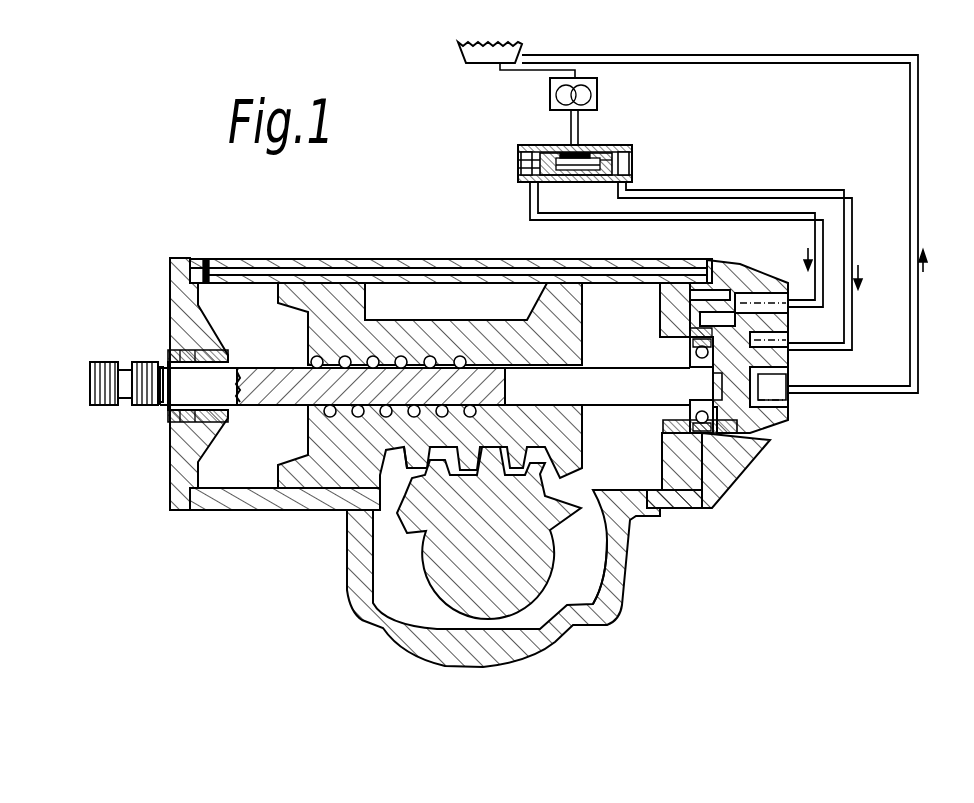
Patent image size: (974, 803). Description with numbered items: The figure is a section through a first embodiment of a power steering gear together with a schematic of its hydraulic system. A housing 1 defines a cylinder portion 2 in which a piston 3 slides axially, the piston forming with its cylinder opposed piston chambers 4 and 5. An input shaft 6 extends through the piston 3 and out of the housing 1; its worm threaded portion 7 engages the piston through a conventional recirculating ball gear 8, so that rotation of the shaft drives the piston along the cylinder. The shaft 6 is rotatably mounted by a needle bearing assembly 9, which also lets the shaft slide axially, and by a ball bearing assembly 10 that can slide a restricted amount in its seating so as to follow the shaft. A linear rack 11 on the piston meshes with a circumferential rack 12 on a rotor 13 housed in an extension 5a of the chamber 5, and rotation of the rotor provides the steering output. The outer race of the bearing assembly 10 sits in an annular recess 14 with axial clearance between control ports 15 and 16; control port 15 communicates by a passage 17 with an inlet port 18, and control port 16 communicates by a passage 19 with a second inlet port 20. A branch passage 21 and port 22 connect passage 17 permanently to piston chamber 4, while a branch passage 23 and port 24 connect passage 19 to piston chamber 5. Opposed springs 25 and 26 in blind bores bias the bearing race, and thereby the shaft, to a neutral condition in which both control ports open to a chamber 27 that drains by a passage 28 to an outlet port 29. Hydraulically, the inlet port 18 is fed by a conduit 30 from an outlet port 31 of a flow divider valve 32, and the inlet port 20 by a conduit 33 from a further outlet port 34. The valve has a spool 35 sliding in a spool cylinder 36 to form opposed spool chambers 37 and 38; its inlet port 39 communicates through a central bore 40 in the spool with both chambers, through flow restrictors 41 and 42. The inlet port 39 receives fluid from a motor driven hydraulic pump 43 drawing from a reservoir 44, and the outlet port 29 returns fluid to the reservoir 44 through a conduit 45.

The housing 1 is at (190, 276).
The cylinder portion 2 is at (212, 284).
The piston 3 is at (420, 322).
The piston chamber 4 is at (246, 468).
The piston chamber 5 is at (626, 456).
The extension of the chamber 5a is at (603, 575).
The input shaft 6 is at (222, 385).
The worm threaded portion 7 is at (262, 372).
The recirculating ball gear 8 is at (316, 356).
The needle bearing assembly 9 is at (200, 420).
The ball bearing assembly 10 is at (712, 440).
The linear rack 11 is at (372, 516).
The circumferential rack 12 is at (395, 530).
The rotor 13 is at (540, 560).
The annular recess 14 is at (690, 334).
The control port 15 is at (700, 320).
The control port 16 is at (762, 360).
The passage 17 is at (690, 296).
The inlet port 18 is at (762, 292).
The passage 19 is at (790, 340).
The second inlet port 20 is at (792, 350).
The branch passage 21 is at (262, 266).
The port 22 is at (206, 259).
The branch passage 23 is at (706, 320).
The port 24 is at (664, 302).
The spring 25 is at (690, 440).
The spring 26 is at (730, 434).
The chamber 27 is at (724, 398).
The passage 28 is at (796, 392).
The outlet port 29 is at (794, 407).
The conduit 30 is at (666, 218).
The outlet port 31 is at (524, 178).
The flow divider valve 32 is at (512, 147).
The conduit 33 is at (853, 203).
The outlet port 34 is at (632, 190).
The spool 35 is at (556, 150).
The spool cylinder 36 is at (598, 150).
The spool chamber 37 is at (520, 160).
The spool chamber 38 is at (630, 158).
The inlet port 39 is at (580, 122).
The central bore 40 is at (556, 168).
The flow restrictor 41 is at (534, 182).
The flow restrictor 42 is at (594, 180).
The hydraulic pump 43 is at (550, 92).
The reservoir 44 is at (462, 55).
The conduit 45 is at (912, 258).